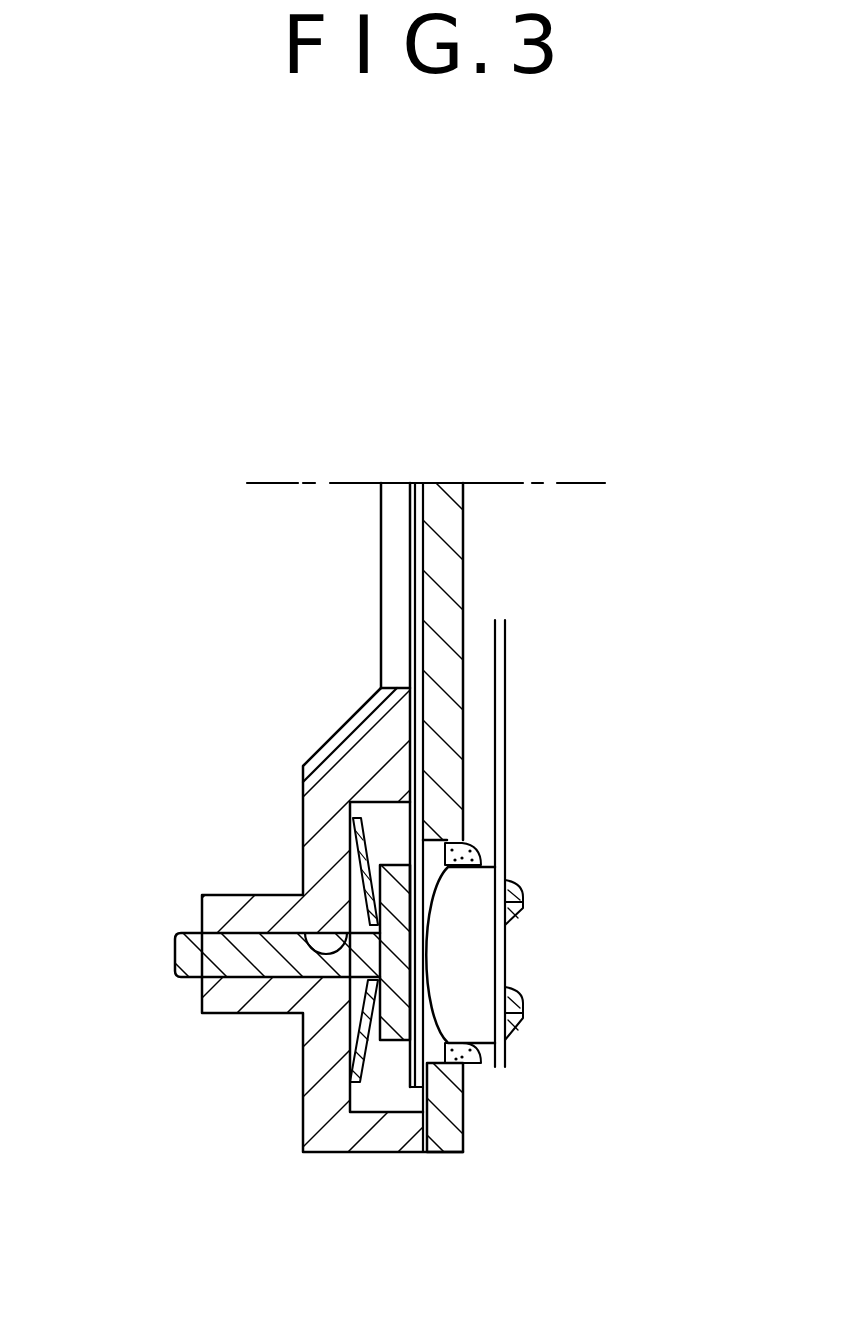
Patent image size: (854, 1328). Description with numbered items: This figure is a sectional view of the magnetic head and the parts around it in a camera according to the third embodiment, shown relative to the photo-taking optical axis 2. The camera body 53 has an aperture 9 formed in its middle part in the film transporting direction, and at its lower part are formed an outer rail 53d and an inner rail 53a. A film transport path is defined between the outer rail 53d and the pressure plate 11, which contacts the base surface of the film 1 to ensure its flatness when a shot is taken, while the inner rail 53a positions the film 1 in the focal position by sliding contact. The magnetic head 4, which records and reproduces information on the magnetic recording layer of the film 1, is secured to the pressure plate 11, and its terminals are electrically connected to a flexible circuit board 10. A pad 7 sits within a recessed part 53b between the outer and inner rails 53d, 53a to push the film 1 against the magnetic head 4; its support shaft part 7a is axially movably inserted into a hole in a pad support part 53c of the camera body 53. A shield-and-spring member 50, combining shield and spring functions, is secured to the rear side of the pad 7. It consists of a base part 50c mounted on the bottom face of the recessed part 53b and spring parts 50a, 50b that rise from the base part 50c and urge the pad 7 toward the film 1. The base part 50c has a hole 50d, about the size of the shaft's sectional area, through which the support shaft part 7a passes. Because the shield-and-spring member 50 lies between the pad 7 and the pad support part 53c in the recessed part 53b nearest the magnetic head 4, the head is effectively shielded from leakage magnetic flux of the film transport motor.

The film 1 is at (417, 537).
The photo-taking optical axis 2 is at (288, 485).
The magnetic head 4 is at (455, 898).
The pad 7 is at (380, 953).
The support shaft part 7a is at (197, 942).
The aperture 9 is at (382, 623).
The flexible circuit board 10 is at (500, 660).
The pressure plate 11 is at (448, 580).
The shield-and-spring member 50 is at (367, 1058).
The spring part 50a is at (387, 1008).
The spring part 50b is at (373, 850).
The base part 50c is at (352, 1022).
The hole 50d is at (300, 930).
The camera body 53 is at (330, 1133).
The inner rail 53a is at (353, 758).
The recessed part 53b is at (390, 817).
The pad support part 53c is at (230, 995).
The outer rail 53d is at (397, 1137).